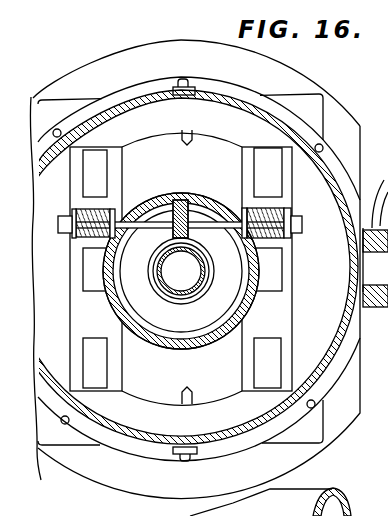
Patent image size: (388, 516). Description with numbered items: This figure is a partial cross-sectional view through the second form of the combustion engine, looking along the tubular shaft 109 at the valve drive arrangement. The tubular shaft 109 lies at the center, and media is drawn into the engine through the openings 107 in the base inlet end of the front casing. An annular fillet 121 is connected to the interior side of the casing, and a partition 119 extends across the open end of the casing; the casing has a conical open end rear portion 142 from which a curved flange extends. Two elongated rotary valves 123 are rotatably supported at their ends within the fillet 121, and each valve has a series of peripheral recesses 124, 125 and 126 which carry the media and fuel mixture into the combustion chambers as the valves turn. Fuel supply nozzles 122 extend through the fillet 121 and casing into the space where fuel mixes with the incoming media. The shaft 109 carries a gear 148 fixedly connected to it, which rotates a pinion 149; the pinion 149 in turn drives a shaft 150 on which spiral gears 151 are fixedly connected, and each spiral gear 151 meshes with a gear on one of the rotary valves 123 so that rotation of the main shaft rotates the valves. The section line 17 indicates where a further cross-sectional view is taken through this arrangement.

The conical open end rear portion 142 is at (283, 79).
The annular fillet 121 is at (226, 124).
The partition 119 is at (57, 376).
The rotary valves 123 is at (78, 320).
The peripheral recess 126 is at (101, 181).
The peripheral recess 125 is at (88, 270).
The peripheral recess 124 is at (98, 366).
The fuel supply nozzles 122 is at (181, 79).
The shaft 150 is at (150, 222).
The spiral gears 151 is at (73, 213).
The pinion 149 is at (179, 203).
The gear 148 is at (190, 298).
The tubular shaft 109 is at (198, 260).
The openings 107 is at (376, 312).
The section line 17 is at (368, 214).